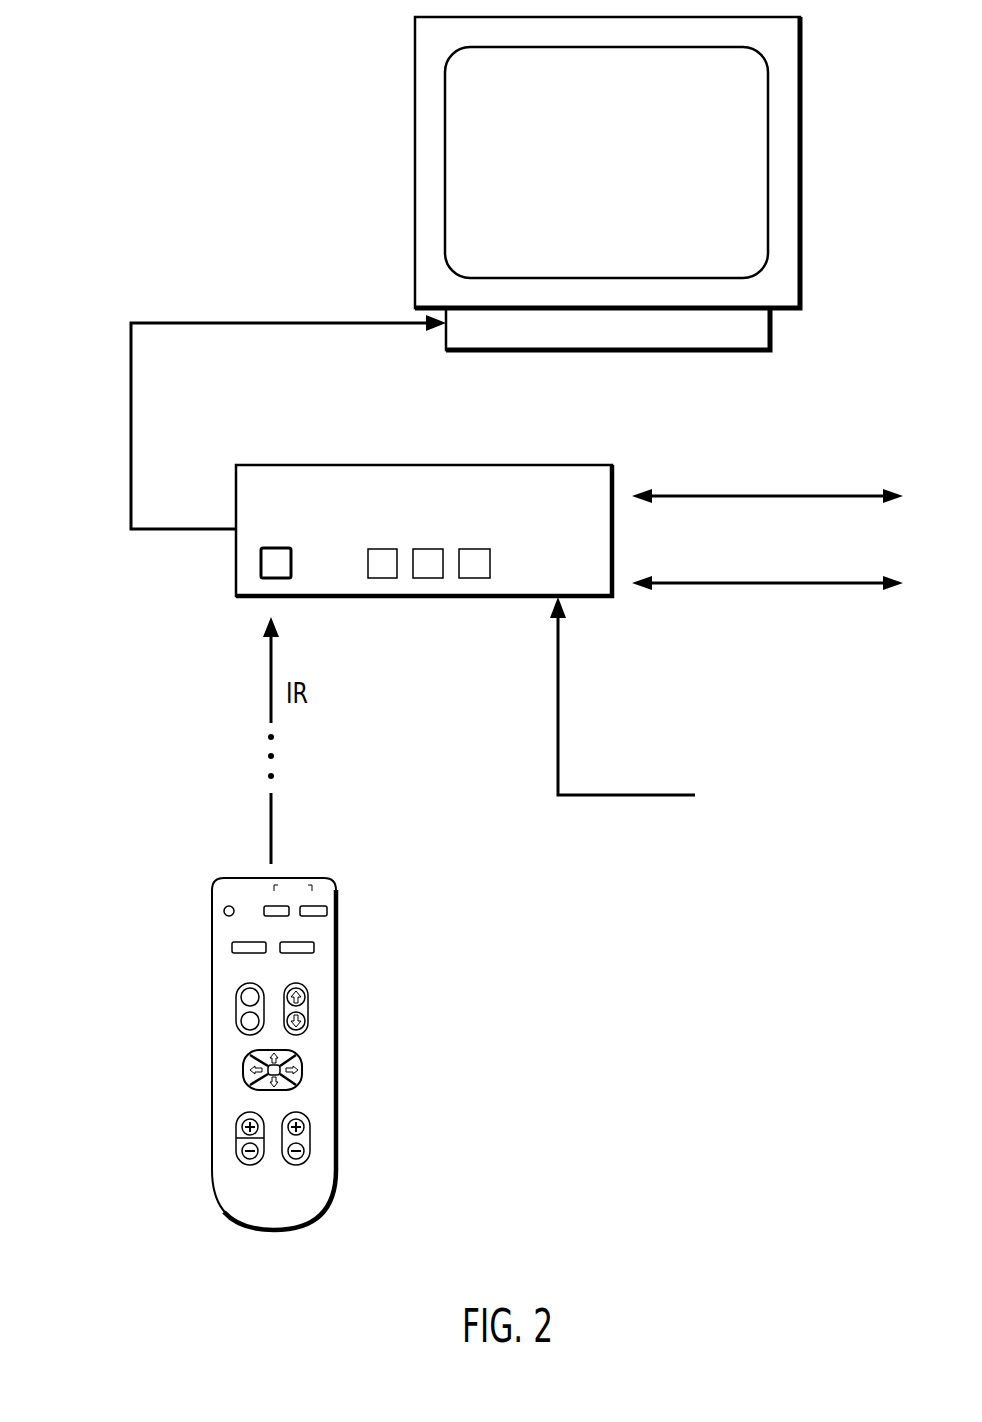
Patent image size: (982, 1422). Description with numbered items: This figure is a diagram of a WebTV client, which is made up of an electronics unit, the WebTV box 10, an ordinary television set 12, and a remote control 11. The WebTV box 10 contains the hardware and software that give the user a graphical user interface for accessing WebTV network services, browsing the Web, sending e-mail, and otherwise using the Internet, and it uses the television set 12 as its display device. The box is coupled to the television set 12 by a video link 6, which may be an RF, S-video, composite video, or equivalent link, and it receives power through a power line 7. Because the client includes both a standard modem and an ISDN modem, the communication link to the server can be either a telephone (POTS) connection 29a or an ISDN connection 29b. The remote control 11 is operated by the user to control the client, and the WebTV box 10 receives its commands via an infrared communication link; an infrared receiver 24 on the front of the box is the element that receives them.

The video link 6 is at (130, 410).
The power line 7 is at (593, 797).
The electronics unit (WebTV box) 10 is at (602, 583).
The remote control 11 is at (283, 1213).
The television set 12 is at (735, 268).
The infrared receiver 24 is at (283, 575).
The telephone (POTS) connection 29a is at (700, 495).
The ISDN connection 29b is at (712, 582).